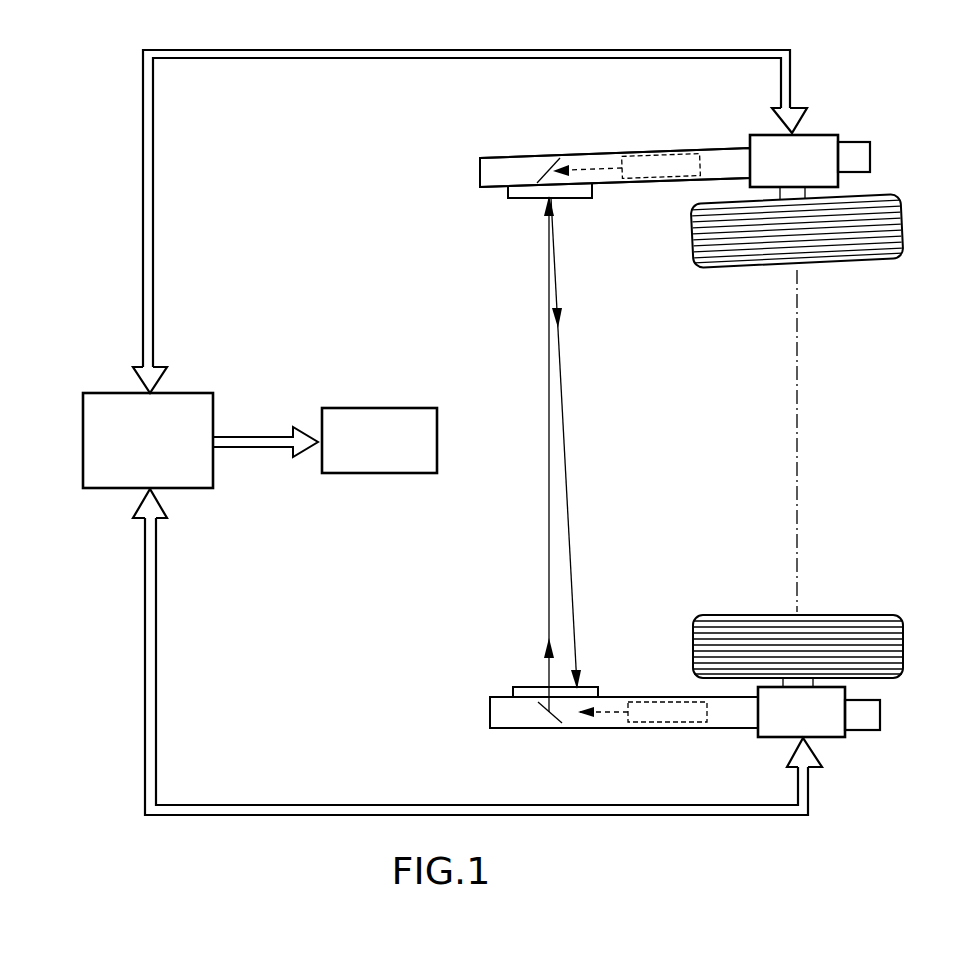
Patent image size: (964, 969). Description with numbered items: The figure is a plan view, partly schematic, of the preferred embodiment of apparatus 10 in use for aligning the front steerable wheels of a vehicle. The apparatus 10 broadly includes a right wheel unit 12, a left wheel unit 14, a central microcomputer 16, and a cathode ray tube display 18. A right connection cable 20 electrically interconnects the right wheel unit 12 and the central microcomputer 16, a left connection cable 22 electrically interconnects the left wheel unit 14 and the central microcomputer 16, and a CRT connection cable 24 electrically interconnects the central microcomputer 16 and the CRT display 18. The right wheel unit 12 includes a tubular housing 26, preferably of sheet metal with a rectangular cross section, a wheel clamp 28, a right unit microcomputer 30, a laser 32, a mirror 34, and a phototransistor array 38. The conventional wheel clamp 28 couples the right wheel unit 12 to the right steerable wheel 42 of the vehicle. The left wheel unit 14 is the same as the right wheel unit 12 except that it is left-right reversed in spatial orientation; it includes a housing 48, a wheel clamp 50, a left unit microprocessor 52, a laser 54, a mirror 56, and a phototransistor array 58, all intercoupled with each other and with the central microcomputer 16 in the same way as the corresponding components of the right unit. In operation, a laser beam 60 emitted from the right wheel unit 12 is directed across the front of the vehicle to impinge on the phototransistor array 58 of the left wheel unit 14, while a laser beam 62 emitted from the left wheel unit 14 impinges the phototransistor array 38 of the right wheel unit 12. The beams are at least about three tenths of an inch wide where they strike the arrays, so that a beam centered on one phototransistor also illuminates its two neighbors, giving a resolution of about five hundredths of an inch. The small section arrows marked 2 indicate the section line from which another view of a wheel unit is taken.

The wheel alignment system 10 is at (906, 125).
The right alignment head 12 is at (496, 146).
The left alignment head 14 is at (460, 701).
The central microcomputer 16 is at (104, 400).
The CRT display 18 is at (385, 413).
The data line from right MC to central microcomputer 20 is at (343, 55).
The data line from central microcomputer to left MC 22 is at (340, 807).
The data line to CRT display 24 is at (263, 436).
The right head housing 26 is at (710, 154).
The right wheel 28 is at (812, 196).
The right microcomputer (RIGHT M.C.) 30 is at (768, 138).
The right laser 32 is at (648, 153).
The right mirror 34 is at (542, 177).
The right sensor 38 is at (508, 193).
The wheel axis centerline 42 is at (827, 265).
The left head housing 48 is at (718, 729).
The left wheel 50 is at (818, 681).
The left microcomputer (LEFT M.C.) 52 is at (838, 737).
The left laser 54 is at (648, 725).
The left mirror 56 is at (540, 705).
The left sensor 58 is at (525, 687).
The laser beam from right head to left head 60 is at (566, 380).
The laser beam from left head to right head 62 is at (548, 505).
The section line for FIG. 2 is at (465, 250).